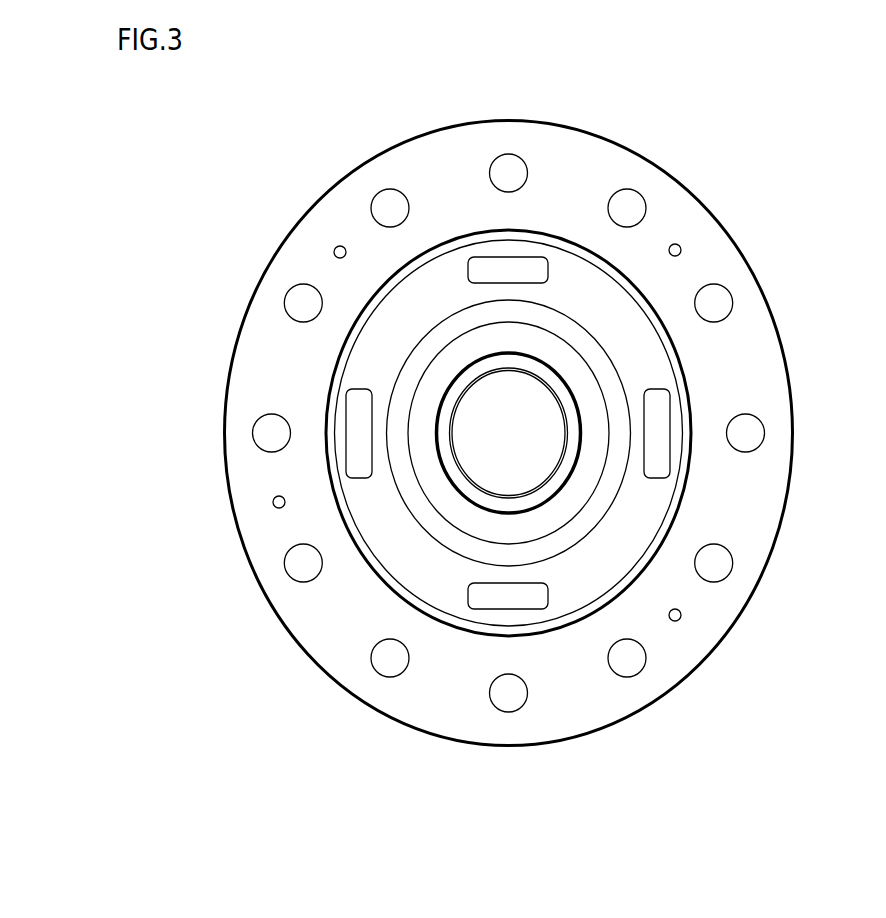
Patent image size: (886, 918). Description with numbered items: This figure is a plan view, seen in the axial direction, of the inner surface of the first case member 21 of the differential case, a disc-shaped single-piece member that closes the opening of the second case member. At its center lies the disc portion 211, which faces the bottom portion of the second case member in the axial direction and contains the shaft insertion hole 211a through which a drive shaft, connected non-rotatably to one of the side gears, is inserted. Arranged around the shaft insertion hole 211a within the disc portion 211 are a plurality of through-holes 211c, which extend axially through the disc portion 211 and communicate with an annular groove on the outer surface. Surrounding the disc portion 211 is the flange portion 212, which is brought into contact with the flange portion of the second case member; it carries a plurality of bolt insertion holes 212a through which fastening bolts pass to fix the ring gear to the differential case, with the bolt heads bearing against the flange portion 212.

The first case member 21 is at (672, 162).
The disc portion 211 is at (415, 310).
The shaft insertion hole 211a is at (537, 380).
The through-holes 211c is at (485, 268).
The flange portion 212 is at (703, 257).
The bolt insertion holes 212a is at (715, 305).